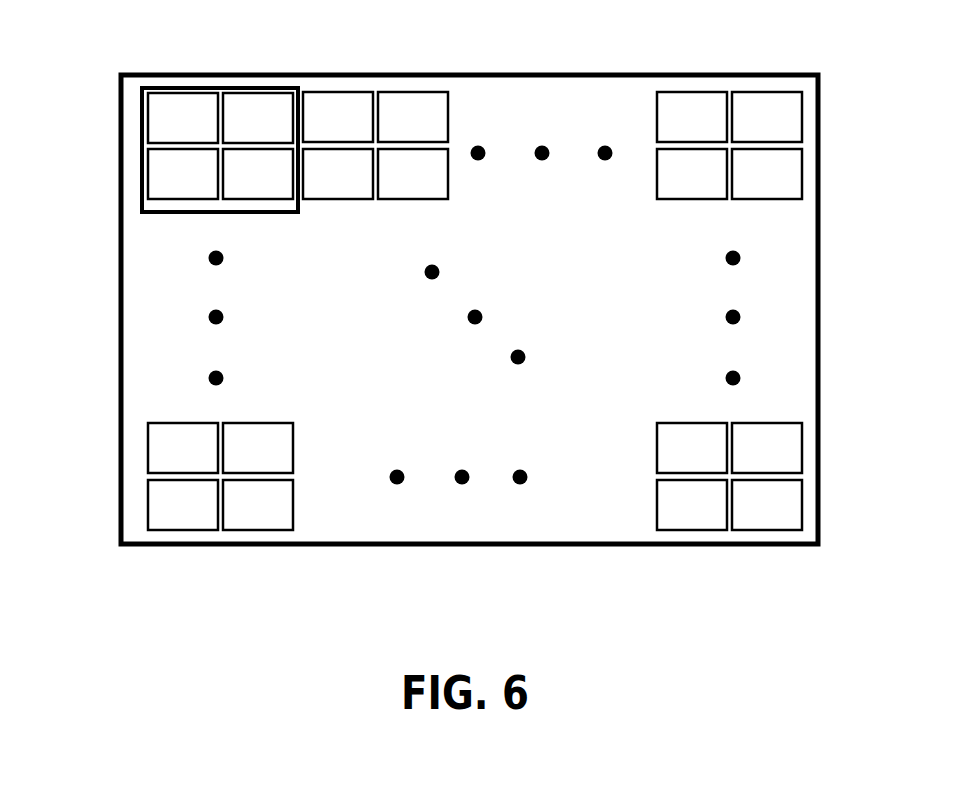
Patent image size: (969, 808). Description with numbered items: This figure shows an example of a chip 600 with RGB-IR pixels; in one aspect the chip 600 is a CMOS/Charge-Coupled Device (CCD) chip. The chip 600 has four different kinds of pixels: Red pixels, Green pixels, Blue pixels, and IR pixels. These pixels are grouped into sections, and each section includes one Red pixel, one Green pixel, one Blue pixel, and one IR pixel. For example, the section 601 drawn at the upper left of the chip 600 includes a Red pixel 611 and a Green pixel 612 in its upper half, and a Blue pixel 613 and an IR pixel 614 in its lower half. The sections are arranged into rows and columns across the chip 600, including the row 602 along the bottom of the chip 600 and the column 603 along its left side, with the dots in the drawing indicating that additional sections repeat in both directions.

The chip 600 is at (820, 300).
The section 601 is at (172, 160).
The row 602 is at (108, 532).
The column 603 is at (146, 553).
The Red pixel 611 is at (194, 101).
The Green pixel 612 is at (265, 102).
The Blue pixel 613 is at (180, 197).
The IR pixel 614 is at (260, 197).